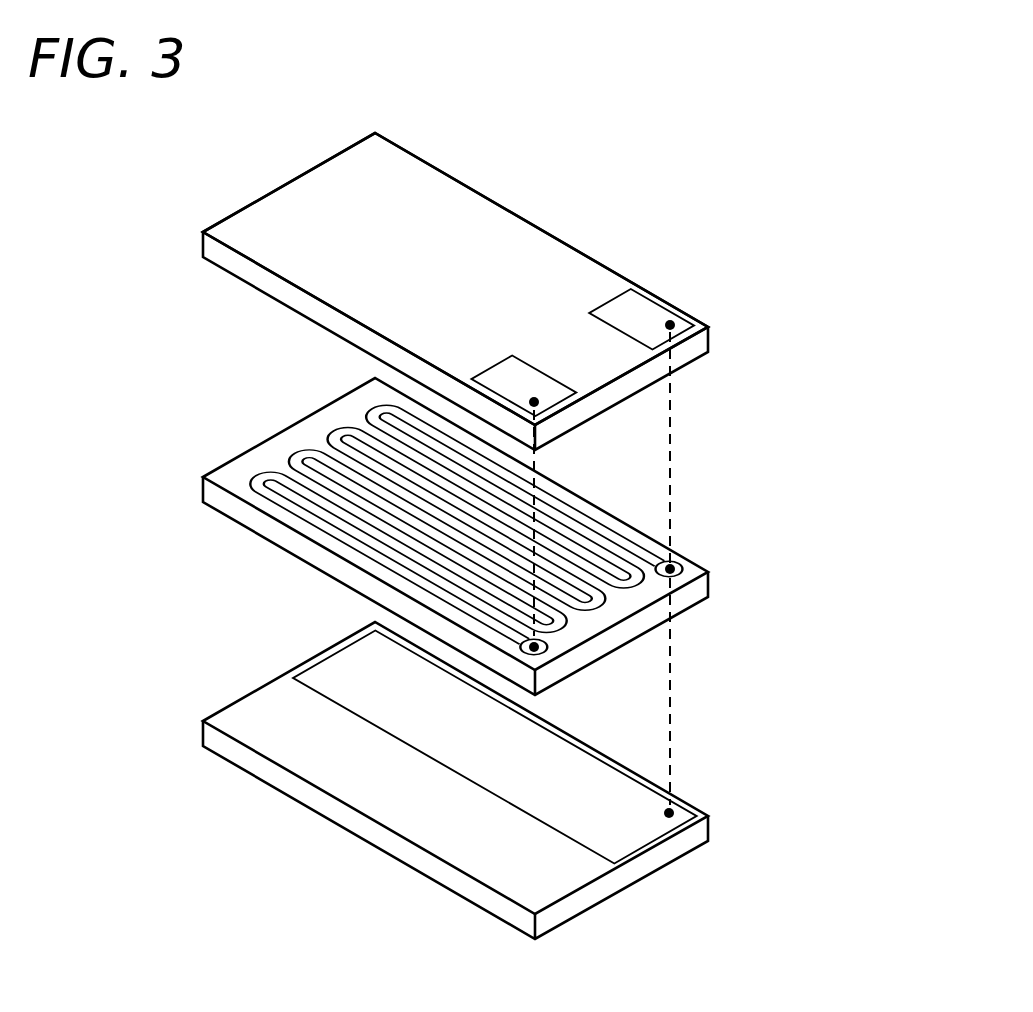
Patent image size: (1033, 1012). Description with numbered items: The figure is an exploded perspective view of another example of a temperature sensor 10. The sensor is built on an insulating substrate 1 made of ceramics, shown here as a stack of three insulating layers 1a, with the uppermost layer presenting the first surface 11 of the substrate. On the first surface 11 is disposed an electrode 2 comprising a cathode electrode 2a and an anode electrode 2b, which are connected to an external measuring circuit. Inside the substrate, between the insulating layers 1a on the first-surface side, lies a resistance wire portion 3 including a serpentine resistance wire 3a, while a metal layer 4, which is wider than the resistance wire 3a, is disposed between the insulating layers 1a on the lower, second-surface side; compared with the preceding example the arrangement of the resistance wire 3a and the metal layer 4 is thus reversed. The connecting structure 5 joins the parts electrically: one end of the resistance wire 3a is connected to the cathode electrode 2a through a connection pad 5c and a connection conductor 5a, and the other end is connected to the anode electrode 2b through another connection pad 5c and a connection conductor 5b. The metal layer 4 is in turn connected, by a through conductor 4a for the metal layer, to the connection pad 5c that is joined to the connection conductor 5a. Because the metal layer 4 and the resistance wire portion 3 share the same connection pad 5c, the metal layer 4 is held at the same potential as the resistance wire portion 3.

The temperature sensor 10 is at (217, 191).
The insulating substrate 1 is at (110, 345).
The insulating layer 1a is at (268, 285).
The first surface 11 is at (440, 258).
The electrode 2 is at (805, 345).
The cathode electrode 2a is at (643, 320).
The anode electrode 2b is at (528, 387).
The resistance wire portion 3 is at (603, 597).
The resistance wire 3a is at (457, 524).
The metal layer 4 is at (565, 807).
The through conductor for a metal layer 4a is at (670, 708).
The connection conductors 5 is at (805, 457).
The connection conductor 5a is at (670, 457).
The connection conductor 5b is at (533, 454).
The connection pad 5c is at (546, 642).